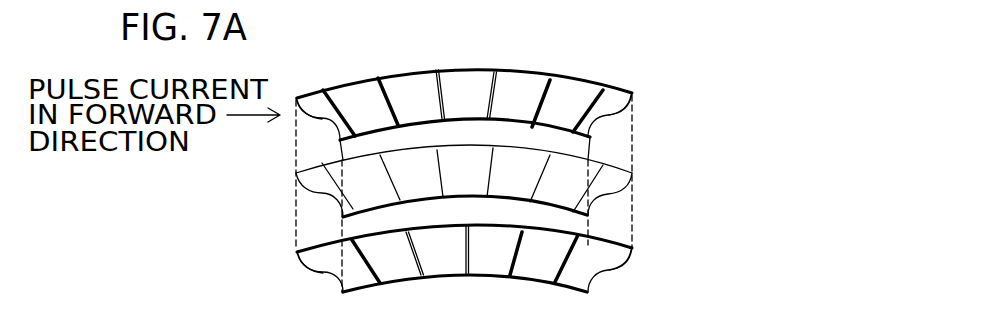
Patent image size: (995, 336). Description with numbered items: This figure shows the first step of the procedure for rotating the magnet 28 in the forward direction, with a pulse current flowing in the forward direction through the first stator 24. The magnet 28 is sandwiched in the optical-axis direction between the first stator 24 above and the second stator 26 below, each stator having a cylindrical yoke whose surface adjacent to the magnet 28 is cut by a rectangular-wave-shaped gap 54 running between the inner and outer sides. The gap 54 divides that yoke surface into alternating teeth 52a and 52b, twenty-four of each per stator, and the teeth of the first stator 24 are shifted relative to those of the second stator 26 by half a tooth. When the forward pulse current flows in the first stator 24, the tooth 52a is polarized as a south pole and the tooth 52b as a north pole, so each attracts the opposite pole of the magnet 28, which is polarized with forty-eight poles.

The first stator 24 is at (678, 110).
The magnet 28 is at (678, 187).
The second stator 26 is at (678, 265).
The tooth 52a is at (478, 77).
The tooth 52b is at (390, 77).
The gap 54 is at (603, 88).